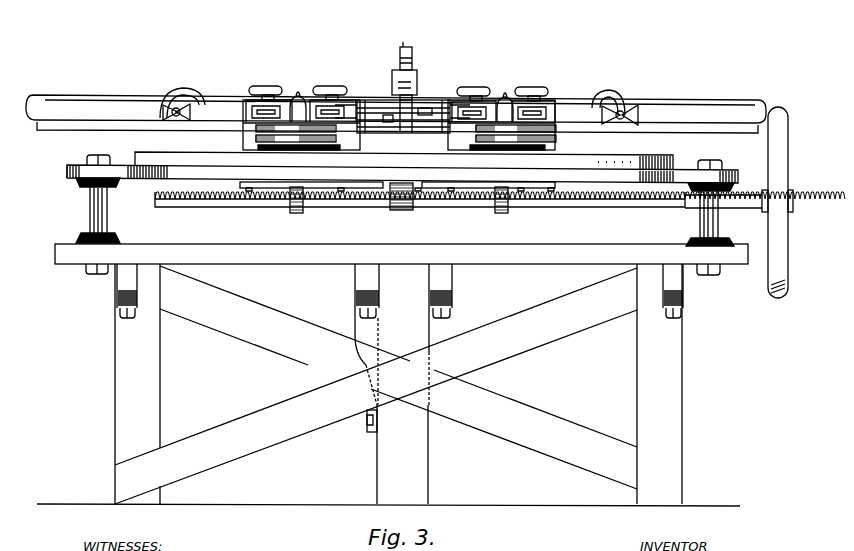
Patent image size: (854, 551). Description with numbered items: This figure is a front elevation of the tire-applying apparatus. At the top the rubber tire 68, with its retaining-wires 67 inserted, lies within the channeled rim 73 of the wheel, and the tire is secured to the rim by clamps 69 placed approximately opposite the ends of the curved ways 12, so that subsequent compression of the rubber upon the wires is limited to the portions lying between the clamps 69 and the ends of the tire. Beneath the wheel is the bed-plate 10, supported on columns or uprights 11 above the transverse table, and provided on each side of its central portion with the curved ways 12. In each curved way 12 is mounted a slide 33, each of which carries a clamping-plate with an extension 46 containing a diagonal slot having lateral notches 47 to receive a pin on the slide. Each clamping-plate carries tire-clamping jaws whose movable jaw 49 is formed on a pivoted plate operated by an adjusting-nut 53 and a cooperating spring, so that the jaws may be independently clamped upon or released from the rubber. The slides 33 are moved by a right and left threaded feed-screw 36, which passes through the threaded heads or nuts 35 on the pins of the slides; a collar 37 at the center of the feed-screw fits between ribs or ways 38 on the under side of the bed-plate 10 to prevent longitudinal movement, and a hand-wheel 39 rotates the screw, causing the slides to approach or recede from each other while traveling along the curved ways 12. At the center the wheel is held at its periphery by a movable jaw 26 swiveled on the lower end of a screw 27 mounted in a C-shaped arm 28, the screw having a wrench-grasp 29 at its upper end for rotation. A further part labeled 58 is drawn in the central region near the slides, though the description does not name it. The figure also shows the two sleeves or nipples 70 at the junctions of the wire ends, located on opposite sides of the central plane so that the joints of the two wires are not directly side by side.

The bed-plate 10 is at (580, 173).
The columns or uprights 11 is at (88, 208).
The curved ways 12 is at (215, 148).
The upper or movable jaw 26 is at (418, 94).
The screw 27 is at (412, 67).
The curved or C-shaped arm 28 is at (393, 76).
The wrench-grasp 29 is at (403, 42).
The slide 33 is at (350, 141).
The threaded head or nut 35 is at (292, 214).
The right and left threaded feed-screw 36 is at (602, 208).
The collar 37 is at (398, 211).
The ribs or ways 38 is at (397, 185).
The hand-wheel 39 is at (772, 160).
The extension of the clamping-plate 46 is at (406, 128).
The lateral notches 47 is at (406, 138).
The upper or movable jaw 49 is at (299, 94).
The adjusting-nut 53 is at (266, 86).
The slide bar 58 is at (360, 124).
The wires 67 is at (411, 125).
The rubber tire 68 is at (396, 109).
The clamps 69 is at (197, 92).
The sleeves or nipples 70 is at (388, 114).
The channeled rim 73 is at (695, 102).